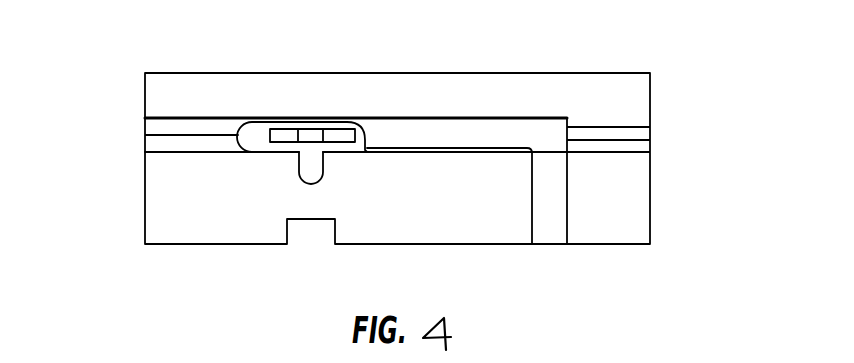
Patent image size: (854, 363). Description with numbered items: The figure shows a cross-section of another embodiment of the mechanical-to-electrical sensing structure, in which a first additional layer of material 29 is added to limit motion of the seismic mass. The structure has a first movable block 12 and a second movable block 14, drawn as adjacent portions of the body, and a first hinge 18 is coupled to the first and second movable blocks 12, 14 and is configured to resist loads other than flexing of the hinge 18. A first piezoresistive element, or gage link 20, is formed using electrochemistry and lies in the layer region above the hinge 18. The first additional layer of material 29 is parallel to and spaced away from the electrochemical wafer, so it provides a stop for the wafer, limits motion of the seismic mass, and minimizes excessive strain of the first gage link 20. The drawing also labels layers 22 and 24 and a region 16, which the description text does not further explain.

The first movable block 12 is at (223, 196).
The second movable block 14 is at (461, 197).
The substrate 16 is at (643, 202).
The first hinge 18 is at (311, 183).
The first gage link 20 is at (311, 137).
The layer 22 is at (152, 127).
The layer 24 is at (152, 143).
The first additional layer of material 29 is at (152, 87).